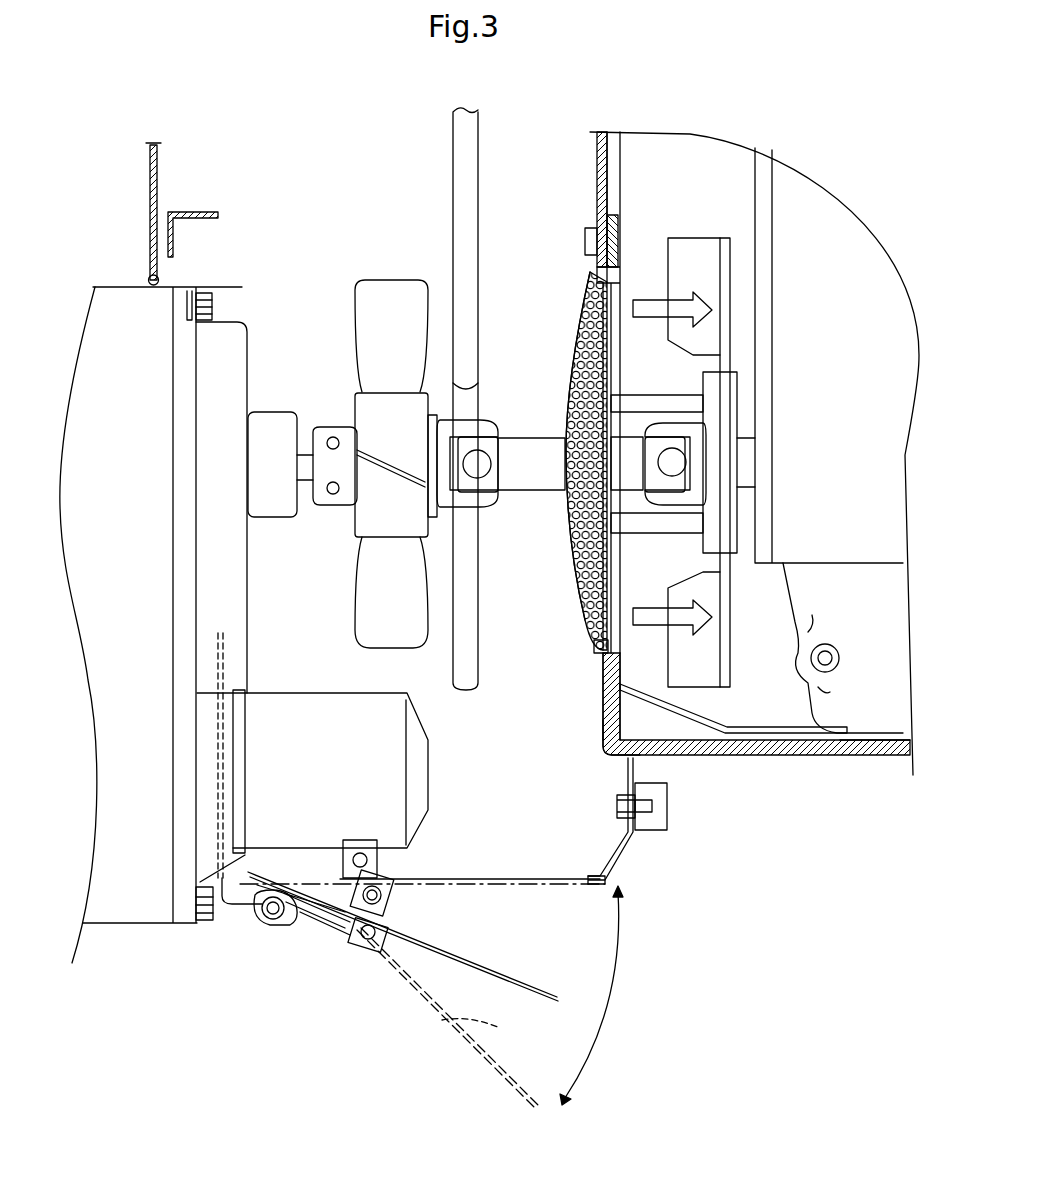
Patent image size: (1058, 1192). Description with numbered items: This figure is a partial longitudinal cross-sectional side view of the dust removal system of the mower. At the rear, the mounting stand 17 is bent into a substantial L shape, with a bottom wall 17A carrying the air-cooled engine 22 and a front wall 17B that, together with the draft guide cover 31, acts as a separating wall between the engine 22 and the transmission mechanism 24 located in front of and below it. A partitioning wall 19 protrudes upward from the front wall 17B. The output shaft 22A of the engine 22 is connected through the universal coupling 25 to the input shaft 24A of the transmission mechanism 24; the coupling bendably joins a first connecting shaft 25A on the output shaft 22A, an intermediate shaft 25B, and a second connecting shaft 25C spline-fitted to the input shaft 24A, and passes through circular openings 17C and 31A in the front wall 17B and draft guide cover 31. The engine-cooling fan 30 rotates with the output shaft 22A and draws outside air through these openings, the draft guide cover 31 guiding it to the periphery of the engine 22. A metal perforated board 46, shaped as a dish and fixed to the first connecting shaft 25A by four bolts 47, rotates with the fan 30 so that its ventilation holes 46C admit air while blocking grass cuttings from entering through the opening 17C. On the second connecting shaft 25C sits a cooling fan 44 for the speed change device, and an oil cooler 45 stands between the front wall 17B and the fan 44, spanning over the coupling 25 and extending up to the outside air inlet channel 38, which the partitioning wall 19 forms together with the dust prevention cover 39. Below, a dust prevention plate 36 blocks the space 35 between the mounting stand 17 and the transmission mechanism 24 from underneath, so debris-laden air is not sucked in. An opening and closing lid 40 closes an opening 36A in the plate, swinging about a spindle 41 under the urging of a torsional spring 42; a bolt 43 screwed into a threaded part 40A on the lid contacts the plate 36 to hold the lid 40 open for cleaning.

The mounting stand 17 is at (780, 760).
The bottom wall 17A is at (842, 757).
The front wall 17B is at (602, 722).
The opening 17C is at (600, 680).
The partitioning wall 19 is at (597, 225).
The air-cooled engine 22 is at (795, 615).
The output shaft 22A is at (748, 487).
The transmission mechanism 24 is at (122, 930).
The input shaft 24A is at (298, 490).
The universal coupling 25 is at (532, 500).
The first connecting shaft 25A is at (737, 396).
The intermediate shaft 25B is at (532, 438).
The second connecting shaft 25C is at (482, 415).
The engine-cooling fan 30 is at (730, 272).
The draft guide cover 31 is at (682, 722).
The opening 31A is at (620, 297).
The space 35 is at (488, 838).
The dust prevention plate 36 is at (628, 845).
The opening 36A is at (543, 872).
The outside air inlet channel 38 is at (240, 208).
The dust prevention cover 39 is at (150, 243).
The opening and closing lid 40 is at (497, 975).
The threaded part 40A is at (390, 905).
The spindle 41 is at (270, 920).
The torsional spring 42 is at (318, 920).
The bolt 43 is at (380, 892).
The cooling fan 44 is at (352, 630).
The oil cooler 45 is at (455, 192).
The perforated board 46 is at (582, 605).
The ventilation holes 46C is at (584, 325).
The bolts 47 is at (676, 395).